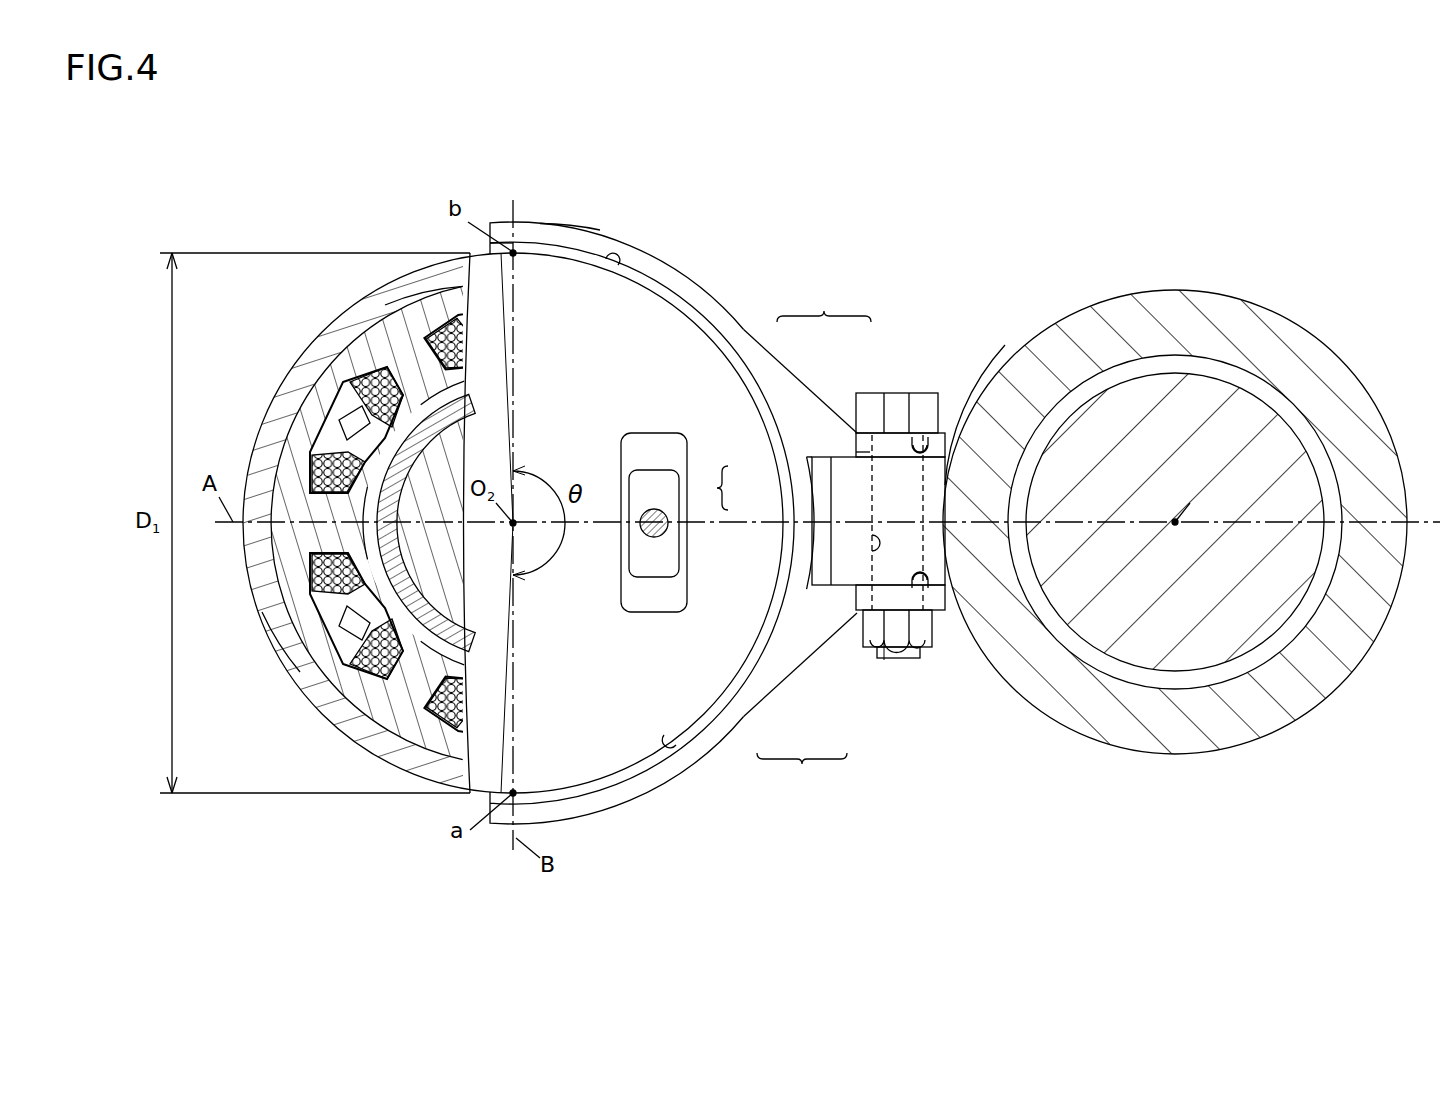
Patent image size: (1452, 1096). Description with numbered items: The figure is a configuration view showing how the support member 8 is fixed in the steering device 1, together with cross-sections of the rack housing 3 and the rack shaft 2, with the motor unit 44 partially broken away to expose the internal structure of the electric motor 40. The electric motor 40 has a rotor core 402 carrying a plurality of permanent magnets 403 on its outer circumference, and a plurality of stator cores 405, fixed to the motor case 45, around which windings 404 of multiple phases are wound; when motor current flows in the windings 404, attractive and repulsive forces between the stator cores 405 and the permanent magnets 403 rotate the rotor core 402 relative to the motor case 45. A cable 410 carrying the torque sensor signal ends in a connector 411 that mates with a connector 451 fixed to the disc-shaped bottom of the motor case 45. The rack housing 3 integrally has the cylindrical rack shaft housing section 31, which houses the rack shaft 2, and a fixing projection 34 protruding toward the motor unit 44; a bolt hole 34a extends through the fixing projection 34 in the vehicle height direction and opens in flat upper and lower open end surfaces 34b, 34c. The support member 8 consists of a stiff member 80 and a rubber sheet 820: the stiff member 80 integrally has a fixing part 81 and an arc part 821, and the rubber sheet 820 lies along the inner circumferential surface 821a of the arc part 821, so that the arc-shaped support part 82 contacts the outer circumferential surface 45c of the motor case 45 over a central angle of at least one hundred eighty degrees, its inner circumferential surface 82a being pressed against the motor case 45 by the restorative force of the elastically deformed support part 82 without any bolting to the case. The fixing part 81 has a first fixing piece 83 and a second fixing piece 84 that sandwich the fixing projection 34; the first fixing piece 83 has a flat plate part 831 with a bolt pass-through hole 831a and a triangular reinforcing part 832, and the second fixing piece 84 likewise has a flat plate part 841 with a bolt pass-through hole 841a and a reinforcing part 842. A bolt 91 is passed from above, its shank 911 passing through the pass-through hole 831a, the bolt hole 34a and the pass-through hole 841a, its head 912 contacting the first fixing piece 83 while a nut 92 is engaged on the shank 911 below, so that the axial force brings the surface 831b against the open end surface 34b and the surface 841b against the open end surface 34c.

The steering device 1 is at (1040, 220).
The rack shaft 2 is at (1305, 438).
The rack housing 3 is at (1175, 489).
The rack shaft housing section 31 is at (1330, 358).
The support member 8 is at (607, 828).
The stiff member 80 is at (854, 520).
The fixing part 81 is at (953, 405).
The support part 82 is at (573, 227).
The rubber sheet 820 is at (519, 248).
The arc part 821 is at (565, 233).
The inner circumferential surface 821a is at (618, 262).
The inner circumferential surface 82a is at (672, 740).
The first fixing piece 83 is at (875, 446).
The flat plate part 831 is at (916, 454).
The bolt pass-through hole 831a is at (930, 432).
The surface 831b is at (940, 415).
The reinforcing part 832 is at (812, 408).
The second fixing piece 84 is at (882, 681).
The flat plate part 841 is at (913, 661).
The bolt pass-through hole 841a is at (918, 650).
The surface 841b is at (935, 640).
The reinforcing part 842 is at (823, 612).
The fixing projection 34 is at (833, 505).
The bolt hole 34a is at (872, 548).
The open end surface 34b is at (896, 437).
The open end surface 34c is at (888, 612).
The bolt 91 is at (780, 470).
The shank 911 is at (872, 510).
The head 912 is at (860, 430).
The nut 92 is at (902, 655).
The electric motor 40 is at (372, 517).
The rotor core 402 is at (362, 322).
The permanent magnets 403 is at (397, 470).
The windings 404 is at (357, 383).
The stator cores 405 is at (330, 396).
The cable 410 is at (640, 538).
The connector 411 is at (650, 470).
The connector 451 is at (660, 433).
The motor unit 44 is at (455, 245).
The motor case 45 is at (484, 523).
The outer circumferential surface 45c is at (282, 652).